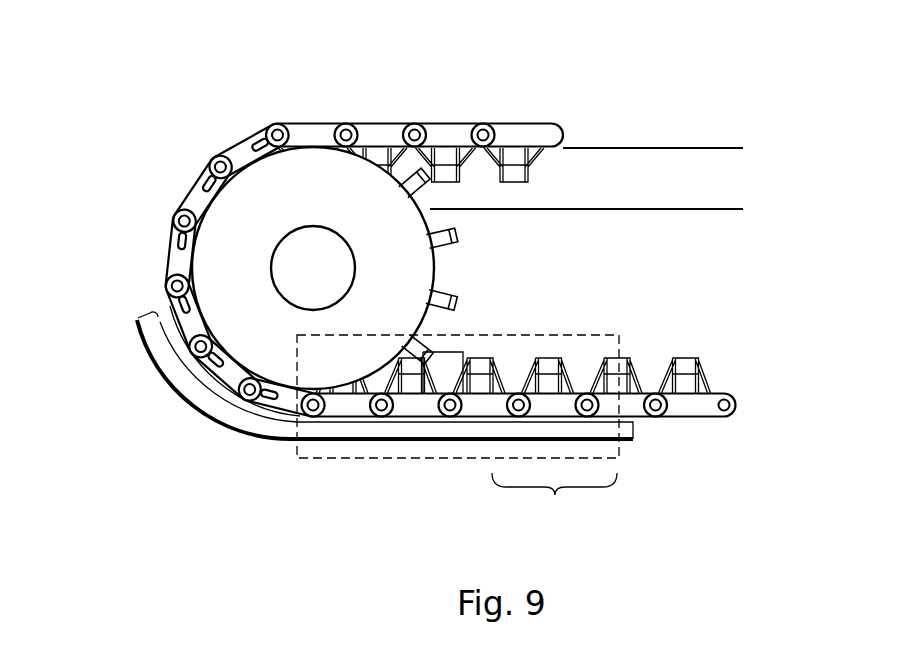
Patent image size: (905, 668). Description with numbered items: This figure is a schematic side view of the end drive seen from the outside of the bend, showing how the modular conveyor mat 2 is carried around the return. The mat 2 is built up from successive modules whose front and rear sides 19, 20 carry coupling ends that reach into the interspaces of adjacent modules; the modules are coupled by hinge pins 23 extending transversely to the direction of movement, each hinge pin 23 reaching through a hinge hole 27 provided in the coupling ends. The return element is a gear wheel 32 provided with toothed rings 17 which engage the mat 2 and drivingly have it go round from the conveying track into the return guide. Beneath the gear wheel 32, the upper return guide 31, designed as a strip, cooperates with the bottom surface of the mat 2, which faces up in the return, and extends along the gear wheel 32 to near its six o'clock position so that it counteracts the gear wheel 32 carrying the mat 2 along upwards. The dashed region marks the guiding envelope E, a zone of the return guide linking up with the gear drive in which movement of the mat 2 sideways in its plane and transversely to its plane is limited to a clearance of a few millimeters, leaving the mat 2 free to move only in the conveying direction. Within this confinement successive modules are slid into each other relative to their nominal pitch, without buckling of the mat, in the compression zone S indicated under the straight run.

The rear side 20 is at (202, 163).
The front side 19 is at (177, 203).
The hinge pin 23 is at (178, 221).
The modular conveyor mat 2 is at (160, 263).
The hinge hole 27 is at (180, 303).
The gear wheel 32 is at (387, 232).
The toothed ring 17 is at (445, 300).
The upper return guide 31 is at (443, 363).
The guiding envelope E is at (362, 458).
The compression zone S is at (554, 500).